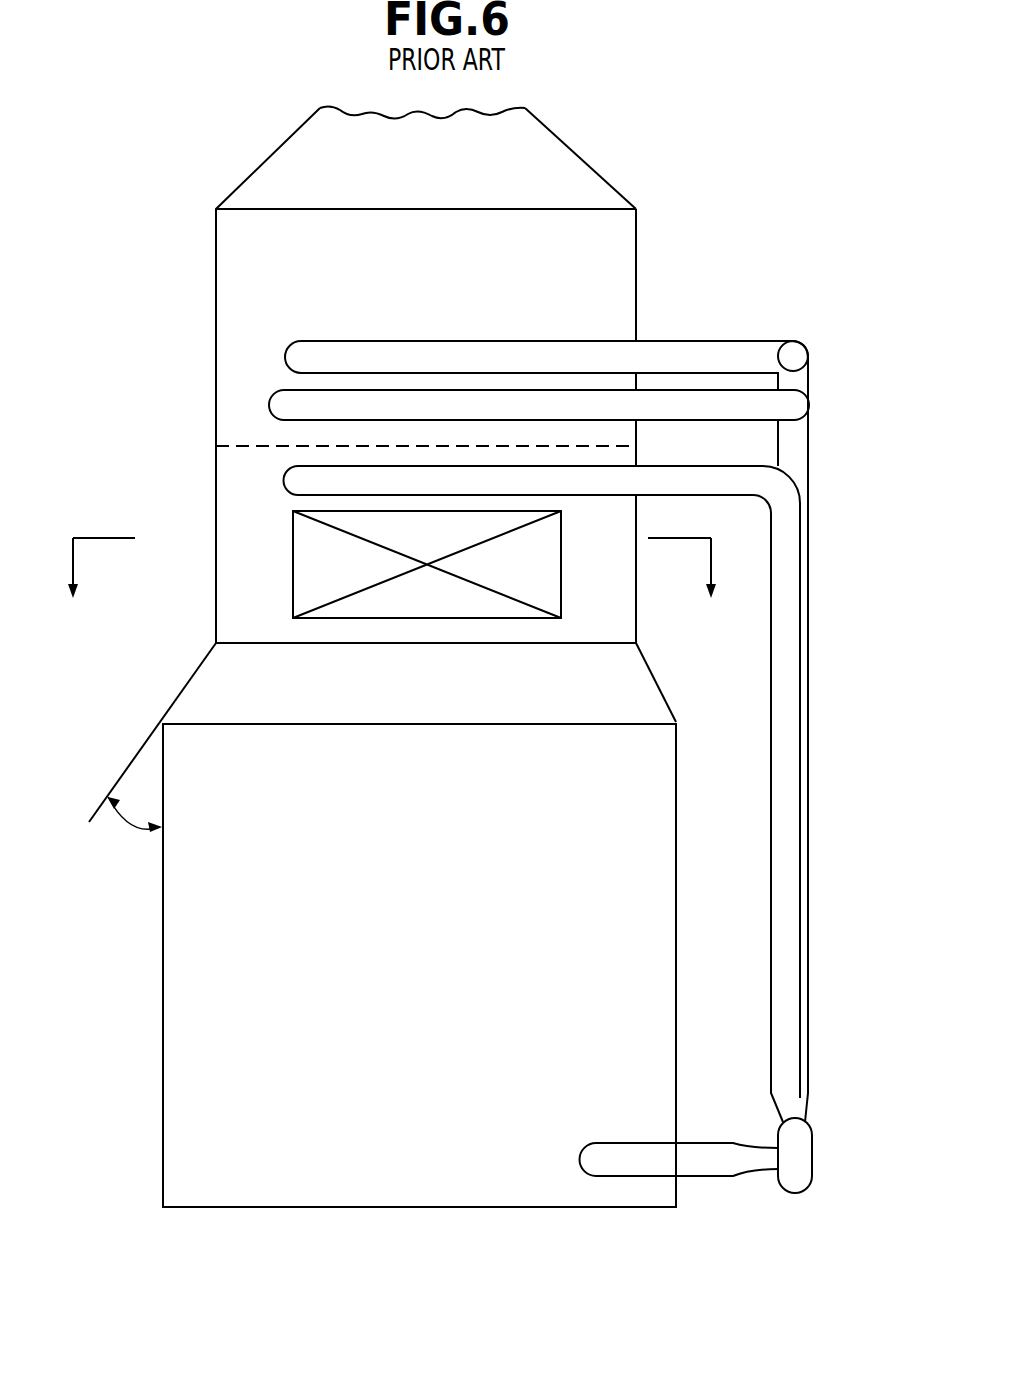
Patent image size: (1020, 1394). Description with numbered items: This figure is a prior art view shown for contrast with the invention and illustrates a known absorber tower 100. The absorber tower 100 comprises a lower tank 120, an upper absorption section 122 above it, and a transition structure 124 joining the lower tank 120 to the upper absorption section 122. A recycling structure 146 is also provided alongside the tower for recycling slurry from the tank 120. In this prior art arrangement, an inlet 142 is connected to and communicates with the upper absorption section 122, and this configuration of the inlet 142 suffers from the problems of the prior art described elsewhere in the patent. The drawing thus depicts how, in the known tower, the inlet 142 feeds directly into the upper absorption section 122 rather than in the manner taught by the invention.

The absorber tower 100 is at (470, 656).
The lower tank 120 is at (163, 1006).
The upper absorption section 122 is at (216, 414).
The transition structure 124 is at (210, 683).
The inlet 142 is at (547, 580).
The recycling structure 146 is at (787, 936).